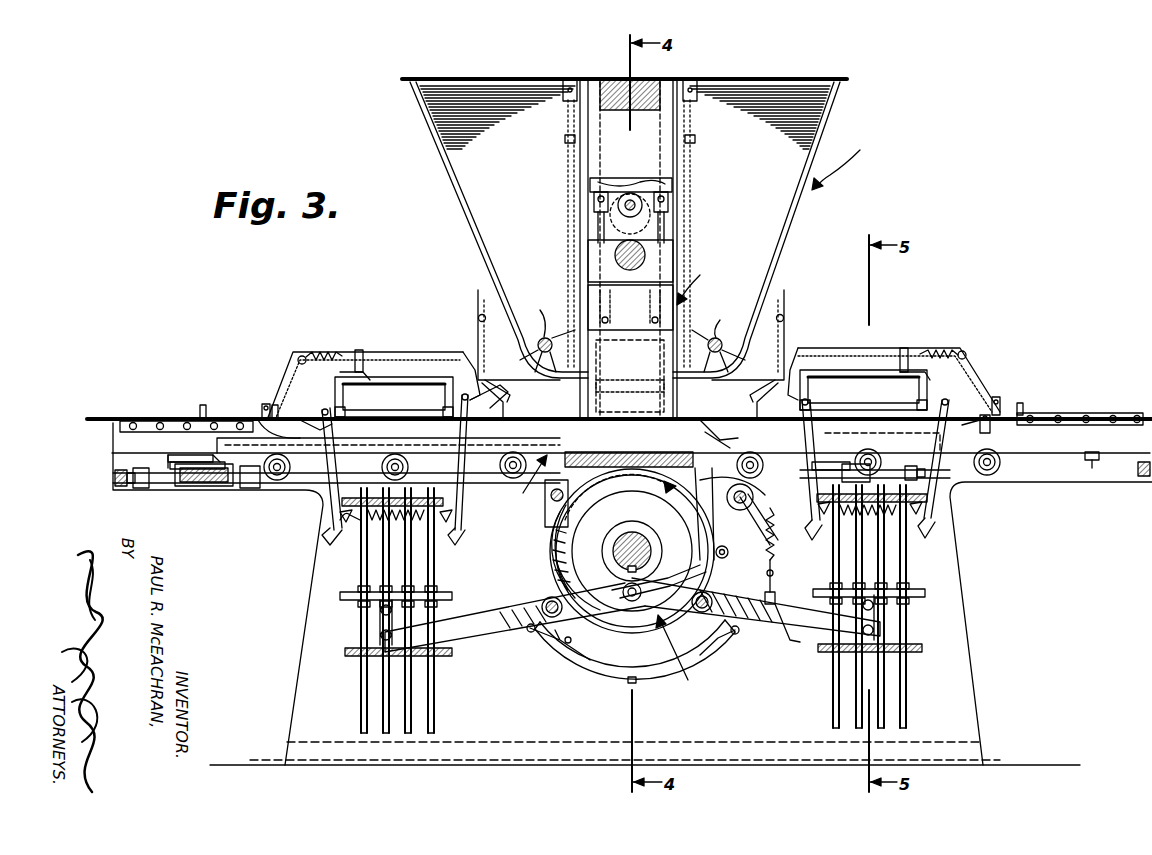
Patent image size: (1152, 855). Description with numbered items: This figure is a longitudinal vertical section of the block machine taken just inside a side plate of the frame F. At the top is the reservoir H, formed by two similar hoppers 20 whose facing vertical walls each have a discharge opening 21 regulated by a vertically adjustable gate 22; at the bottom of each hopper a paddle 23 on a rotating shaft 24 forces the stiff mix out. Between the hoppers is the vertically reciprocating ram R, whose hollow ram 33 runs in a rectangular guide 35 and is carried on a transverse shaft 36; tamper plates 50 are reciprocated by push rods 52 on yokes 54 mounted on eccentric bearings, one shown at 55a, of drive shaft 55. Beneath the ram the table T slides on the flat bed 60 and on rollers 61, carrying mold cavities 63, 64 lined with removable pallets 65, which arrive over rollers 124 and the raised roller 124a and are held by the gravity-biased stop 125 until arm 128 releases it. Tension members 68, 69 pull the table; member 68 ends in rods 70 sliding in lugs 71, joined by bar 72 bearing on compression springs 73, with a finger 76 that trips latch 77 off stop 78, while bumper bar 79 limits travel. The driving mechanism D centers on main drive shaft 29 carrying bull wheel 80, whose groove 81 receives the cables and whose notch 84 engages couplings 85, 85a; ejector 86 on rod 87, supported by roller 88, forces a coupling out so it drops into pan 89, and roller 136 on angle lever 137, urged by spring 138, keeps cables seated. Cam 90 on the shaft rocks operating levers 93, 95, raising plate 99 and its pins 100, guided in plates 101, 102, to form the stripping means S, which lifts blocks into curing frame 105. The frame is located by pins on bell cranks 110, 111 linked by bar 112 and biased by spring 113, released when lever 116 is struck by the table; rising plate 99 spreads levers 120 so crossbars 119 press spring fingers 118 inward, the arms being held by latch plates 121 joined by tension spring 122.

The hopper 20 is at (624, 229).
The discharge opening 21 is at (580, 362).
The gate 22 is at (592, 200).
The paddle 23 is at (535, 323).
The shaft 24 is at (748, 364).
The main drive shaft 29 is at (614, 560).
The ram 33 is at (600, 280).
The guide 35 is at (630, 373).
The transverse shaft 36 is at (614, 253).
The tamper plate 50 is at (630, 307).
The push rod 52 is at (597, 222).
The yoke 54 is at (660, 186).
The drive shaft 55 is at (630, 200).
The eccentric bearing 55a is at (648, 226).
The bed 60 is at (660, 452).
The roller 61 is at (392, 455).
The mold cavity 63 is at (631, 438).
The mold cavity 64 is at (590, 432).
The pallet 65 is at (165, 420).
The tension member 68 is at (335, 520).
The tension member 69 is at (754, 493).
The rod 70 is at (262, 484).
The lug 71 is at (245, 488).
The bar 72 is at (130, 483).
The compression spring 73 is at (142, 468).
The finger 76 is at (190, 486).
The latch 77 is at (208, 462).
The stop 78 is at (168, 458).
The bumper bar 79 is at (114, 476).
The bull wheel 80 is at (632, 551).
The groove 81 is at (712, 505).
The notch 84 is at (648, 584).
The coupling 85 is at (712, 560).
The coupling 85a is at (570, 648).
The ejector 86 is at (556, 528).
The rod 87 is at (550, 500).
The roller 88 is at (555, 557).
The pan 89 is at (608, 672).
The cam 90 is at (612, 548).
The operating lever 93 is at (490, 630).
The operating lever 95 is at (784, 630).
The plate 99 is at (350, 600).
The pin 100 is at (385, 588).
The guide plate 101 is at (375, 656).
The guide plate 102 is at (355, 506).
The curing frame 105 is at (631, 393).
The bell crank 110 is at (358, 350).
The bell crank 111 is at (815, 333).
The bar 112 is at (405, 352).
The spring 113 is at (322, 352).
The lever 116 is at (506, 405).
The spring finger 118 is at (338, 407).
The crossbar 119 is at (322, 415).
The lever 120 is at (325, 480).
The latch plate 121 is at (325, 537).
The tension spring 122 is at (420, 520).
The roller 124 is at (203, 405).
The roller 124a is at (264, 404).
The stop 125 is at (982, 428).
The arm 128 is at (716, 420).
The roller 136 is at (738, 553).
The angle lever 137 is at (774, 535).
The spring 138 is at (788, 576).
The reservoir H is at (843, 164).
The ram R is at (693, 281).
The table T is at (530, 482).
The driving mechanism D is at (675, 657).
The stripping means S is at (350, 565).
The frame F is at (988, 641).